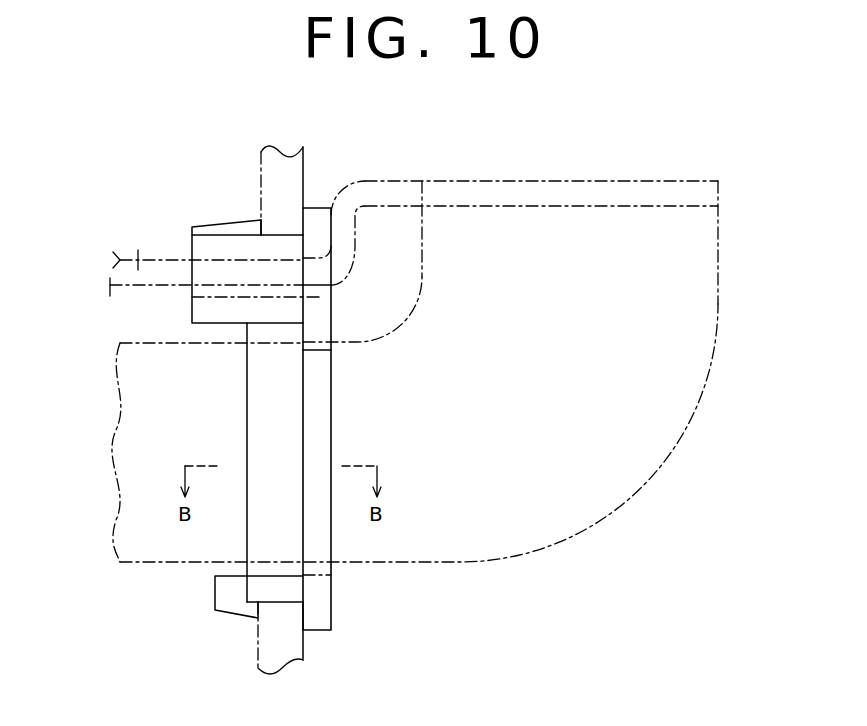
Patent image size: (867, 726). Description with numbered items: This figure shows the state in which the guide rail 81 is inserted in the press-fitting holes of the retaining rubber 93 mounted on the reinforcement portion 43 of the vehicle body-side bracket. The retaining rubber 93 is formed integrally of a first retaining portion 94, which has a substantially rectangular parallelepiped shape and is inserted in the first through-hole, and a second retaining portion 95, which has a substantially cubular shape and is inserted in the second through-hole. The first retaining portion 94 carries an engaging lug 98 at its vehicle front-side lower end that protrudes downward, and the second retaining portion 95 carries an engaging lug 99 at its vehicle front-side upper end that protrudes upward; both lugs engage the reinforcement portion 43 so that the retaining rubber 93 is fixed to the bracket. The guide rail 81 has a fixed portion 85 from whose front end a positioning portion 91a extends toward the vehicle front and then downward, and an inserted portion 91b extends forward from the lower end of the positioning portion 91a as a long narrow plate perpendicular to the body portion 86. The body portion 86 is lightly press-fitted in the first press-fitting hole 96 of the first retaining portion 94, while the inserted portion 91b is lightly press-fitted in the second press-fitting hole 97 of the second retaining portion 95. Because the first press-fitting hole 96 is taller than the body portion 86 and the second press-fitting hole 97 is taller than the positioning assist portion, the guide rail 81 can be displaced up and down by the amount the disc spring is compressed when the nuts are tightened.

The reinforcement portion 43 is at (262, 152).
The guide rail 81 is at (449, 350).
The fixed portion 85 is at (617, 192).
The body portion 86 is at (427, 540).
The positioning portion 91a is at (371, 195).
The inserted portion 91b is at (138, 252).
The retaining rubber 93 is at (313, 208).
The first retaining portion 94 is at (258, 393).
The second retaining portion 95 is at (196, 243).
The first press-fitting hole 96 is at (283, 573).
The second press-fitting hole 97 is at (193, 295).
The engaging lug 98 is at (227, 604).
The engaging lug 99 is at (237, 228).